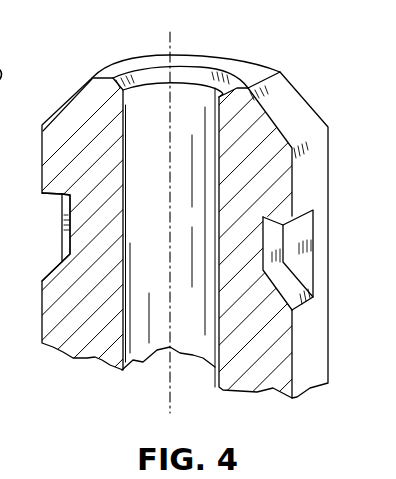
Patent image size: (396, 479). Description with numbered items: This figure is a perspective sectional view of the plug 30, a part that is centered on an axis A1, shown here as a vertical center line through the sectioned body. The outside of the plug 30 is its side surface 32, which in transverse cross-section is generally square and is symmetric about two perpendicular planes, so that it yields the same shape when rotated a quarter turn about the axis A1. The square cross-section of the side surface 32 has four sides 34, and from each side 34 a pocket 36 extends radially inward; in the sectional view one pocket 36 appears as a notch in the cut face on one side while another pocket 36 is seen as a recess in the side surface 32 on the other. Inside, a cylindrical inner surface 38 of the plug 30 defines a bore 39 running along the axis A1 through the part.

The plug 30 is at (297, 52).
The side surface 32 is at (312, 187).
The side 34 is at (318, 232).
The pocket 36 is at (322, 272).
The cylindrical inner surface 38 is at (149, 97).
The bore 39 is at (135, 82).
The axis A1 is at (172, 42).